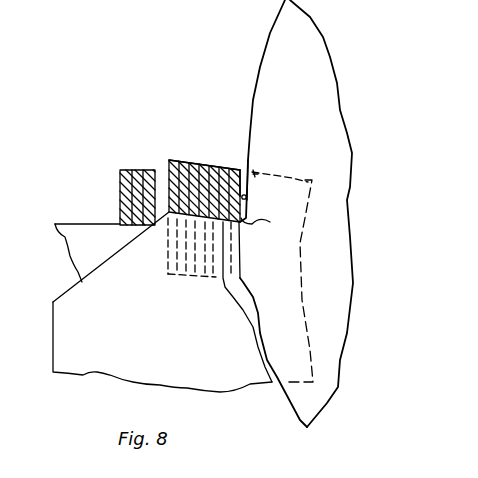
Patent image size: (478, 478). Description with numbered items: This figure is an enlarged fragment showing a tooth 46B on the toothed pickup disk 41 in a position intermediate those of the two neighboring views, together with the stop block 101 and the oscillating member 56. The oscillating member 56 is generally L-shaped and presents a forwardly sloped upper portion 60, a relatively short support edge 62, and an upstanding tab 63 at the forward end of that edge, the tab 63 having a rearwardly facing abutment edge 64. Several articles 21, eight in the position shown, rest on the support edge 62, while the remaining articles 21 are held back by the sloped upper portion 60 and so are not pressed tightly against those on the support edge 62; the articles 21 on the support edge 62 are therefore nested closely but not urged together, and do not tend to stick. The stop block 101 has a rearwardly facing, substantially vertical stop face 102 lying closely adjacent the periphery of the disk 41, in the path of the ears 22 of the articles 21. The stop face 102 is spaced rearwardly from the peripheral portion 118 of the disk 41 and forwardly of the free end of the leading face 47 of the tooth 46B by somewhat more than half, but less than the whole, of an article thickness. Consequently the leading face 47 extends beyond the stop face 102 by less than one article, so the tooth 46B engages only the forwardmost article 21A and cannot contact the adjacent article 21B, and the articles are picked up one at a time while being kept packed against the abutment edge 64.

The article 21 is at (125, 167).
The forwardmost article 21A is at (233, 167).
The adjacent article 21B is at (235, 170).
The ears 22 is at (117, 193).
The pickup disk 41 is at (318, 57).
The tooth 46B is at (245, 272).
The leading face 47 is at (264, 228).
The oscillating member 56 is at (112, 357).
The forwardly sloped upper portion 60 is at (97, 268).
The support edge 62 is at (190, 208).
The tab 63 is at (310, 217).
The abutment edge 64 is at (252, 170).
The stop block 101 is at (247, 170).
The stop face 102 is at (213, 167).
The peripheral portion 118 is at (247, 197).